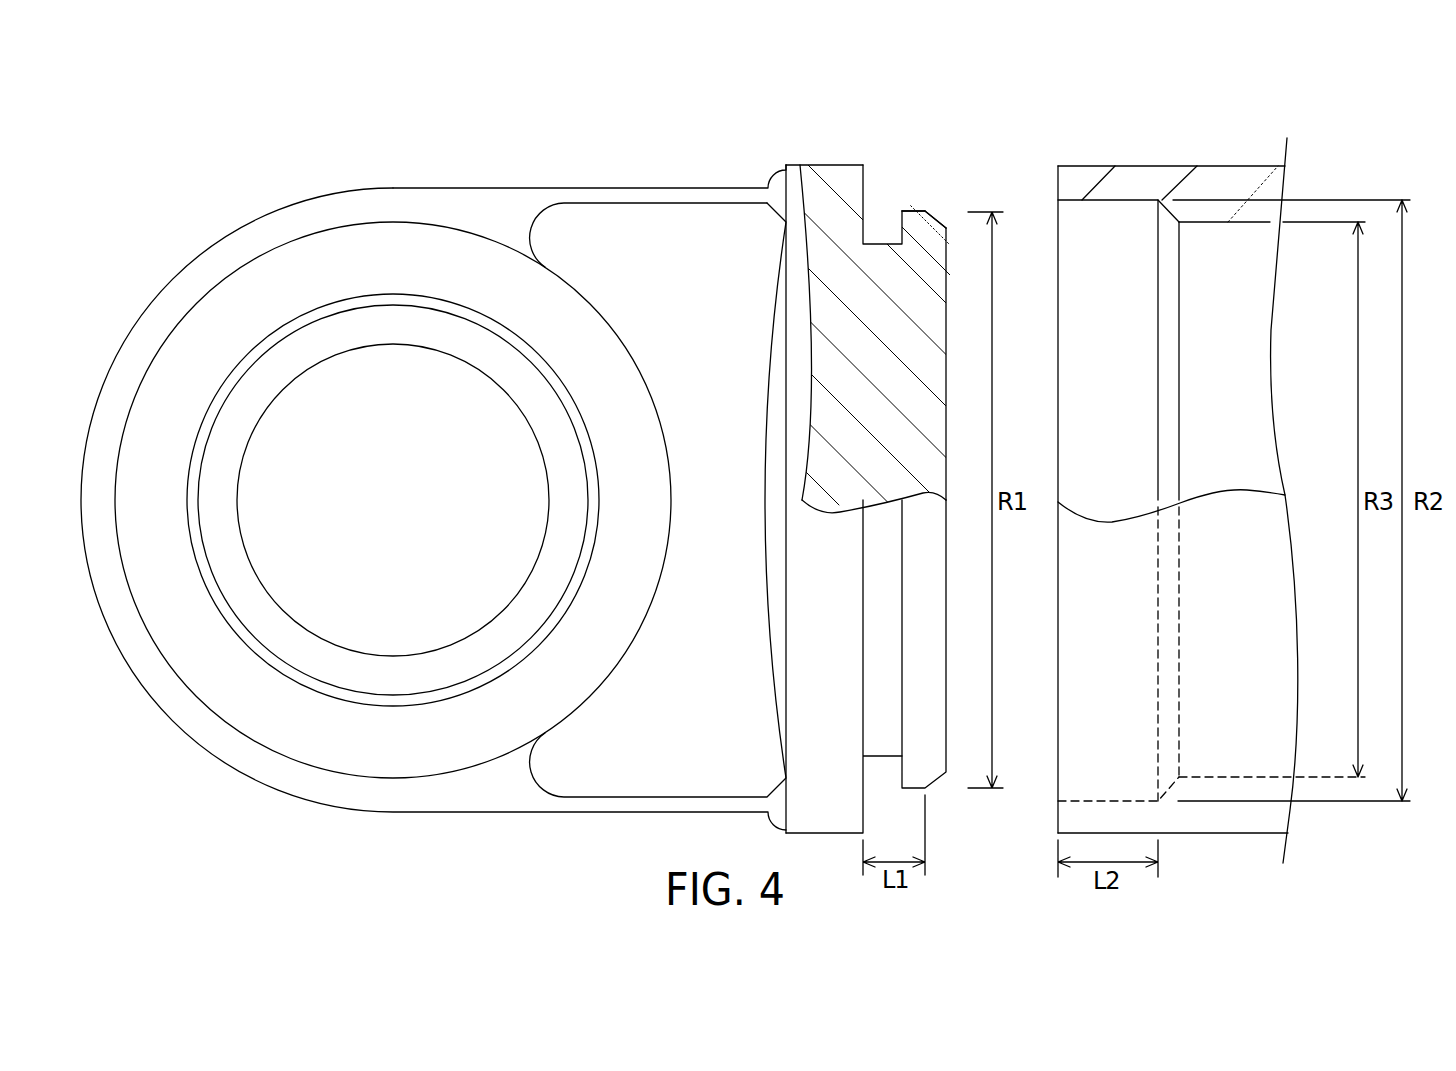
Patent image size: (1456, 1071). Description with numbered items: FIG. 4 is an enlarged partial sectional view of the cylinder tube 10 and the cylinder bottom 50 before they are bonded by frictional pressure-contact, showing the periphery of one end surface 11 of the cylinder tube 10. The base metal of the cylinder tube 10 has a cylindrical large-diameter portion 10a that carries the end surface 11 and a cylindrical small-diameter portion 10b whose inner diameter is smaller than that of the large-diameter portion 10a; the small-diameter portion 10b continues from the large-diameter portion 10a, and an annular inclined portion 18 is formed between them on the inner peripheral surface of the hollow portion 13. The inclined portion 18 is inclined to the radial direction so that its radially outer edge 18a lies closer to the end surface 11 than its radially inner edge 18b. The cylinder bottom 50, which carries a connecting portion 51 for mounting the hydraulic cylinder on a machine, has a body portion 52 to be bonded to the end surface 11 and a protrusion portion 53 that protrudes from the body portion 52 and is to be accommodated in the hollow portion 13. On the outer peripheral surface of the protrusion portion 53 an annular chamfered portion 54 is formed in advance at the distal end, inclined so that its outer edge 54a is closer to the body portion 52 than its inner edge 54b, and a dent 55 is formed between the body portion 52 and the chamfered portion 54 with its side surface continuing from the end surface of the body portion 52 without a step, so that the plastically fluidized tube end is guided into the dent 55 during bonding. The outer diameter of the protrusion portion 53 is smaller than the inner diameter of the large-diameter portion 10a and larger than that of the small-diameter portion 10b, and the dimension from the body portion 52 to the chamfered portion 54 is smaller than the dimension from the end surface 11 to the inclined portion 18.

The cylinder tube 10 is at (1267, 163).
The large-diameter portion 10a is at (1092, 178).
The small-diameter portion 10b is at (1229, 183).
The end surface 11 is at (1058, 172).
The hollow portion 13 is at (1237, 222).
The inclined portion 18 is at (1152, 222).
The edge on outer side in radial direction of inclined portion 18a is at (1158, 198).
The edge on inner side in radial direction of inclined portion 18b is at (1179, 222).
The cylinder bottom 50 is at (502, 187).
The connecting portion 51 is at (395, 750).
The body portion 52 is at (823, 212).
The protrusion portion 53 is at (912, 755).
The chamfered portion 54 is at (938, 232).
The edge on outer side in radial direction of chamfered portion 54a is at (923, 208).
The edge on inner side in radial direction of chamfered portion 54b is at (947, 228).
The dent 55 is at (893, 243).